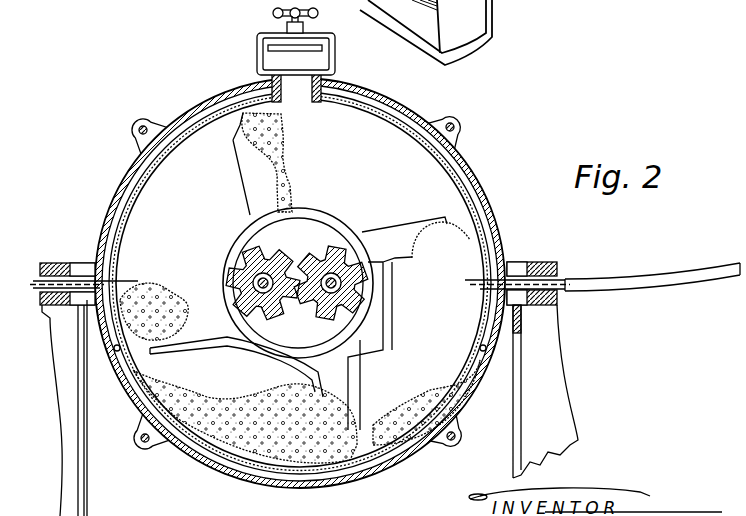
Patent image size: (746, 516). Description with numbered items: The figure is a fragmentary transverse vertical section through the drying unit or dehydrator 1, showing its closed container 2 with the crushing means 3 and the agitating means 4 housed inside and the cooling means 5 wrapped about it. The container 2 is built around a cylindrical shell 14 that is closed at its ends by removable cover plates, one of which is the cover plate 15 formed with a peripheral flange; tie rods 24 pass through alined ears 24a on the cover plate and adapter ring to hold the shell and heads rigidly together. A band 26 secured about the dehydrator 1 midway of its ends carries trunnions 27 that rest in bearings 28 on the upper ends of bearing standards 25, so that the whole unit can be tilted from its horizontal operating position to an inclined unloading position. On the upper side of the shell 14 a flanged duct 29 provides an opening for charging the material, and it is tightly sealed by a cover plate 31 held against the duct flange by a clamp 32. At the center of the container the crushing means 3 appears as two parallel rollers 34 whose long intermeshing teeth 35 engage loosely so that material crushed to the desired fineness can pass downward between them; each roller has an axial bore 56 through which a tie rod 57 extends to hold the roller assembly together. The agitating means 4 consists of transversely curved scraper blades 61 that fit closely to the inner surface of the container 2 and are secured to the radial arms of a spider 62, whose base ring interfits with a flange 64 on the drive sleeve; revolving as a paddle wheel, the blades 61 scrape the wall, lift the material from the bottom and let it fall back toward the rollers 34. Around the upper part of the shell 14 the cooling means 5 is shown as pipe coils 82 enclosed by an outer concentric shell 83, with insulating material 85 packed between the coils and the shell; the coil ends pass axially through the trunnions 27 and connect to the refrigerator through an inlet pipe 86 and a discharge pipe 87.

The drying unit or dehydrator 1 is at (303, 282).
The closed receptacle or container 2 is at (232, 466).
The crushing means 3 is at (130, 305).
The agitating means 4 is at (404, 218).
The cooling means 5 is at (195, 122).
The cylindrical shell 14 is at (215, 452).
The cover plate 15 is at (172, 173).
The tie rods 24 is at (299, 286).
The ears 24a is at (457, 118).
The bearing standards 25 is at (88, 500).
The band 26 is at (126, 176).
The trunnions 27 is at (50, 280).
The bearings 28 is at (312, 255).
The duct 29 is at (300, 102).
The cover plate 31 is at (270, 49).
The clamp 32 is at (258, 36).
The rollers 34 is at (301, 288).
The teeth 35 is at (242, 254).
The axial bores 56 is at (274, 282).
The tie rods 57 is at (263, 303).
The scraper blades 61 is at (248, 110).
The spider 62 is at (326, 206).
The flange 64 is at (336, 228).
The pipe coils 82 is at (118, 352).
The outer concentric shell 83 is at (500, 181).
The insulating material 85 is at (392, 112).
The inlet pipe 86 is at (63, 410).
The discharge pipe 87 is at (610, 278).